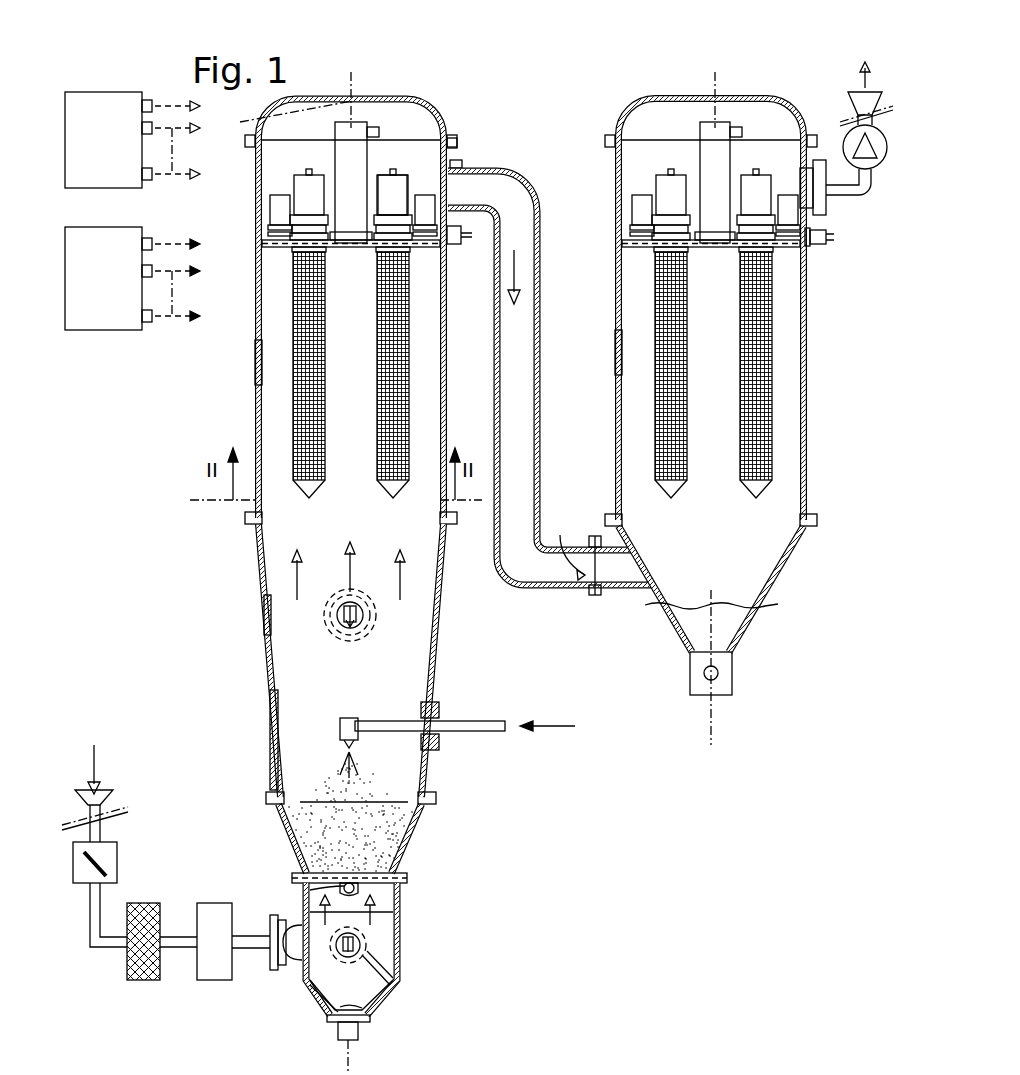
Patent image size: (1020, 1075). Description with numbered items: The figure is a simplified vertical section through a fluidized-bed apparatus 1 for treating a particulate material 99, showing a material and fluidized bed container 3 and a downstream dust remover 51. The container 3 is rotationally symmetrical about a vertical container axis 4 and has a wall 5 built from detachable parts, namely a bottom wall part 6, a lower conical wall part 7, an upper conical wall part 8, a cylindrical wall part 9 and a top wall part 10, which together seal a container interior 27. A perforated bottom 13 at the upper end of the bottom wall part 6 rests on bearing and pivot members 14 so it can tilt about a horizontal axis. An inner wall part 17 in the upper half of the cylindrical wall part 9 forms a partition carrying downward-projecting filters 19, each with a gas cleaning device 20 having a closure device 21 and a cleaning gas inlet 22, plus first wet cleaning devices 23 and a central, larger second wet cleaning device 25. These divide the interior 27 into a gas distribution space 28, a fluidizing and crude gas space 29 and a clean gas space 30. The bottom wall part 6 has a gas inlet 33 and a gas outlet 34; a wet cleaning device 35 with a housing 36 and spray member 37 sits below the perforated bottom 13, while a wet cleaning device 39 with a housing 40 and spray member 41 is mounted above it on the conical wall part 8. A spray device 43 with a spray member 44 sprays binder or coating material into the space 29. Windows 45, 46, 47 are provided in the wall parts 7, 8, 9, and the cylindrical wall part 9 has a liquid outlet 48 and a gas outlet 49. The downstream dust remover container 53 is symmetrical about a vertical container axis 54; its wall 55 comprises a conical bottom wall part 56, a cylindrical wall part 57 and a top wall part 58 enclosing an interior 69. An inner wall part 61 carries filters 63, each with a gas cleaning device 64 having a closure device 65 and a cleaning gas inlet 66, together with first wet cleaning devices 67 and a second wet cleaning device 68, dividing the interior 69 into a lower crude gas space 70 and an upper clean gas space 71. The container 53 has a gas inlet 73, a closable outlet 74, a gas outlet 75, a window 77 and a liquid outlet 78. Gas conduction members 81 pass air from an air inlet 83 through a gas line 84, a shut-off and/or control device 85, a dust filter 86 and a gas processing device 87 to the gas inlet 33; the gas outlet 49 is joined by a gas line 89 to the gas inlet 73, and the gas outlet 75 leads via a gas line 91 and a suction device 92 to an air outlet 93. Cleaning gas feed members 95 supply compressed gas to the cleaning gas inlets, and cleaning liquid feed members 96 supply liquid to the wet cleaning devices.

The fluidized-bed apparatus 1 is at (98, 973).
The material and fluidized bed container 3 is at (258, 555).
The vertical container axis 4 is at (286, 117).
The wall 5 is at (260, 599).
The bottom wall part 6 is at (403, 933).
The lower conical wall part 7 is at (400, 840).
The upper conical wall part 8 is at (300, 644).
The cylindrical wall part 9 is at (257, 310).
The top wall part 10 is at (306, 97).
The perforated bottom 13 is at (302, 864).
The bearing and pivot members 14 is at (335, 895).
The inner wall part 17 is at (292, 243).
The filter 19 is at (382, 486).
The gas cleaning device 20 is at (292, 186).
The closure device 21 is at (396, 175).
The cleaning gas inlet 22 is at (410, 190).
The first wet cleaning device 23 is at (276, 206).
The second wet cleaning device 25 is at (354, 135).
The container interior 27 is at (322, 985).
The gas distribution space 28 is at (348, 1002).
The fluidizing and crude gas space 29 is at (268, 632).
The clean gas space 30 is at (456, 142).
The gas inlet 33 is at (283, 950).
The gas outlet 34 is at (360, 1036).
The wet cleaning device 35 is at (403, 950).
The housing 36 is at (405, 968).
The spray member 37 is at (405, 982).
The wet cleaning device 39 is at (368, 626).
The housing 40 is at (368, 604).
The spray member 41 is at (364, 614).
The spray device 43 is at (468, 731).
The spray member 44 is at (340, 726).
The window 45 is at (292, 842).
The window 46 is at (272, 742).
The window 47 is at (256, 358).
The liquid outlet 48 is at (455, 246).
The gas outlet 49 is at (462, 165).
The downstream dust remover 51 is at (628, 108).
The downstream dust remover container 53 is at (616, 194).
The vertical container axis 54 is at (715, 738).
The wall 55 is at (617, 293).
The conical bottom wall part 56 is at (656, 587).
The cylindrical wall part 57 is at (617, 432).
The top wall part 58 is at (664, 96).
The inner wall part 61 is at (640, 242).
The filters 63 is at (745, 490).
The gas cleaning device 64 is at (644, 175).
The closure device 65 is at (670, 175).
The cleaning gas inlet 66 is at (640, 195).
The first wet cleaning devices 67 is at (760, 185).
The second wet cleaning device 68 is at (720, 125).
The interior 69 is at (690, 596).
The crude gas space 70 is at (775, 540).
The clean gas space 71 is at (792, 196).
The gas inlet 73 is at (596, 596).
The outlet 74 is at (732, 672).
The gas outlet 75 is at (826, 242).
The window 77 is at (617, 352).
The liquid outlet 78 is at (808, 262).
The gas conduction members 81 is at (82, 790).
The air inlet 83 is at (108, 797).
The gas line 84 is at (106, 828).
The shut-off and/or control device 85 is at (118, 862).
The dust filter 86 is at (158, 893).
The gas processing device 87 is at (215, 904).
The gas line 89 is at (533, 220).
The gas line 91 is at (858, 196).
The suction device 92 is at (876, 170).
The air outlet 93 is at (880, 94).
The cleaning gas feed members 95 is at (106, 94).
The cleaning liquid feed members 96 is at (118, 330).
The particulate material 99 is at (400, 826).